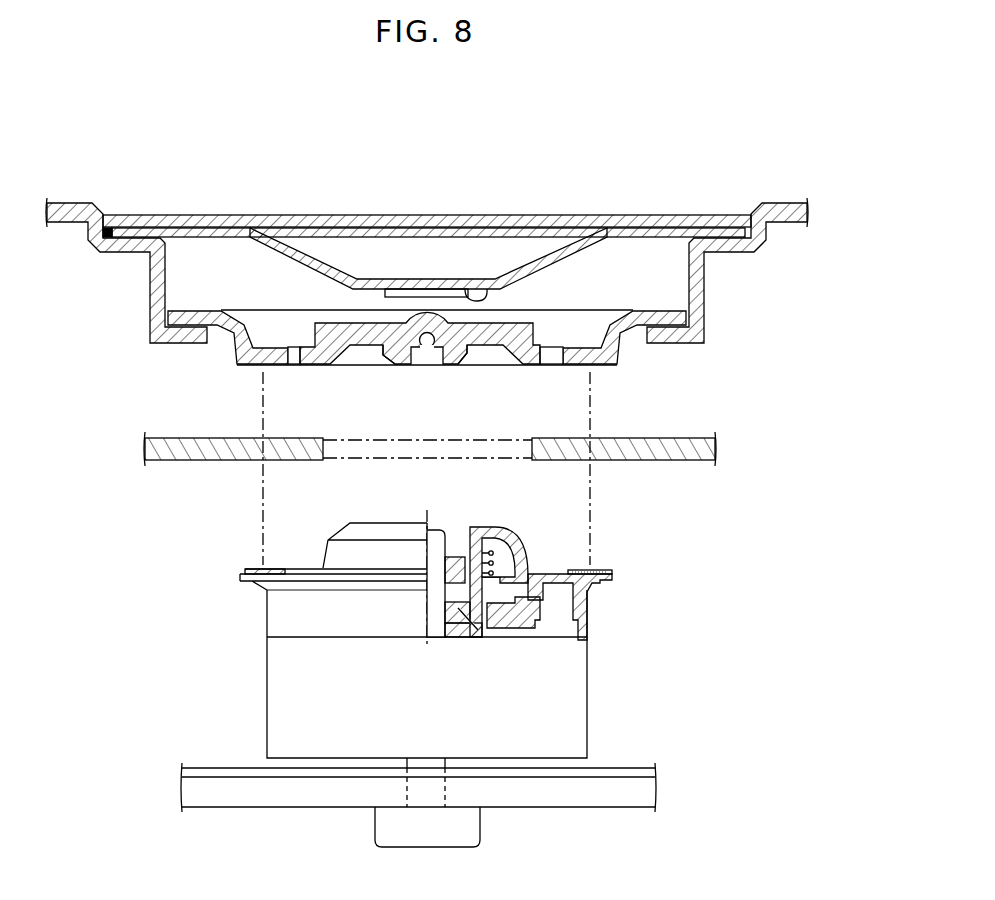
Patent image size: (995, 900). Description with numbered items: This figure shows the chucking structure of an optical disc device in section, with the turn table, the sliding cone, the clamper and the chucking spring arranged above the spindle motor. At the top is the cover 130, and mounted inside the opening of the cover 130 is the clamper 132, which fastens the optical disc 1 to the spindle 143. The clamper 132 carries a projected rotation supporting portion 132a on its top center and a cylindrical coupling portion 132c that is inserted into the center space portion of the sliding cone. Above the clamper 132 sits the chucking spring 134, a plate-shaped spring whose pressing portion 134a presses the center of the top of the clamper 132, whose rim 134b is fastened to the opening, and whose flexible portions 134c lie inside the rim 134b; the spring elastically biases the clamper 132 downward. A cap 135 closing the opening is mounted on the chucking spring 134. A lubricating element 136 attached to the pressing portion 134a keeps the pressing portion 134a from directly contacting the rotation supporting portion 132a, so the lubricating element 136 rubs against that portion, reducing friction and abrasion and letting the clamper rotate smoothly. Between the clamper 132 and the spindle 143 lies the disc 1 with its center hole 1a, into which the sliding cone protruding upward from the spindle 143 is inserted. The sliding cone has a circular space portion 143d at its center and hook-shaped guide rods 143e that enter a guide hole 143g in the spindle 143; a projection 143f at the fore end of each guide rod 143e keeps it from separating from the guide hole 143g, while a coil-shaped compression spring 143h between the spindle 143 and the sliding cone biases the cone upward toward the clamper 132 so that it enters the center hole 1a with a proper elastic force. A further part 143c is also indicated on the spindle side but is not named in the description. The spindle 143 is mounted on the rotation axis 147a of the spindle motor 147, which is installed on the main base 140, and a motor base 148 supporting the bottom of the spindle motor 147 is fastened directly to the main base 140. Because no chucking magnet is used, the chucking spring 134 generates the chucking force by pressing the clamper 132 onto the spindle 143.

The optical disc 1 is at (480, 430).
The center hole 1a is at (527, 446).
The cover 130 is at (72, 203).
The clamper 132 is at (438, 332).
The rotation supporting portion 132a is at (428, 312).
The cylindrical coupling portion 132c is at (457, 364).
The chucking spring 134 is at (424, 239).
The pressing portion 134a is at (427, 290).
The rim 134b is at (158, 232).
The flexible portions 134c is at (307, 255).
The cap 135 is at (575, 221).
The lubricating element 136 is at (487, 297).
The main base 140 is at (653, 792).
The spindle 143 is at (562, 586).
The flange 143c is at (603, 570).
The circular space portion 143d is at (459, 538).
The hook-shaped guide rod 143e is at (481, 545).
The projection 143f is at (473, 626).
The guide hole 143g is at (470, 622).
The compression spring 143h is at (493, 575).
The spindle motor 147 is at (447, 614).
The rotation axis 147a is at (442, 533).
The motor base 148 is at (653, 772).